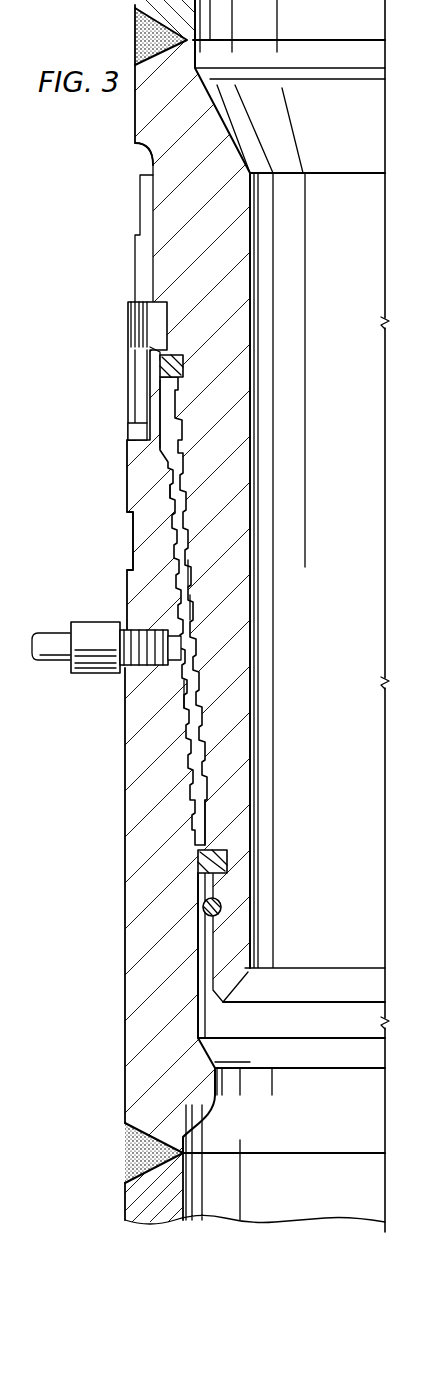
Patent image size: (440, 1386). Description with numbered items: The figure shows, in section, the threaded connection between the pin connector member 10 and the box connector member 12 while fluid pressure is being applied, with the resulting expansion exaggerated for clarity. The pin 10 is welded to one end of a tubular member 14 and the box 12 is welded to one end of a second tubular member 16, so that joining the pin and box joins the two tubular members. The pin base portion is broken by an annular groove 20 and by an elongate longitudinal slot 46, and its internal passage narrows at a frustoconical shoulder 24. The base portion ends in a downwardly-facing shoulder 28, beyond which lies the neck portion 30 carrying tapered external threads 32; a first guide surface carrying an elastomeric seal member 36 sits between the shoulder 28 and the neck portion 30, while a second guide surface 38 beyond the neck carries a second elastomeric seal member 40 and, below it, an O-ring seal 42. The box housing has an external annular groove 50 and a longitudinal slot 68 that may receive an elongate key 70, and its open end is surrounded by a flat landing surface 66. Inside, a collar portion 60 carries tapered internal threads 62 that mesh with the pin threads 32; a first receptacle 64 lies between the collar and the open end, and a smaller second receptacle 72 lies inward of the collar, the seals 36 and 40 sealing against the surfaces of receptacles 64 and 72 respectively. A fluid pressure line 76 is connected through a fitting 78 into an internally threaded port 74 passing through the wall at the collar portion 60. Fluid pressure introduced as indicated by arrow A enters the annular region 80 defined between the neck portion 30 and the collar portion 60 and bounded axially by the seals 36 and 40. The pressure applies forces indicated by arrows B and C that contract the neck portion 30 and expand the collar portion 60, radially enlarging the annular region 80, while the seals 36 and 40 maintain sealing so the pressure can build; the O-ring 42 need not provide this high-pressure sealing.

The pin connector member 10 is at (110, 128).
The box connector member 12 is at (100, 769).
The tubular member 14 is at (147, 2).
The second tubular member 16 is at (137, 1207).
The annular groove 20 is at (137, 178).
The frustoconical shoulder 24 is at (230, 133).
The downwardly-facing shoulder 28 is at (150, 315).
The neck portion 30 is at (190, 490).
The external threads 32 is at (193, 572).
The elastomeric seal member 36 is at (160, 370).
The second external annular guide surface 38 is at (208, 807).
The second elastomeric seal member 40 is at (207, 863).
The O-ring seal 42 is at (222, 907).
The longitudinally-oriented slot 46 is at (150, 270).
The annular groove 50 is at (128, 568).
The internal collar portion 60 is at (177, 688).
The internal threads 62 is at (167, 478).
The receptacle 64 is at (160, 410).
The annular flat landing surface 66 is at (155, 352).
The longitudinally-oriented slot 68 is at (143, 425).
The elongate key 70 is at (133, 337).
The second receptacle 72 is at (195, 953).
The port 74 is at (185, 648).
The fluid pressure line 76 is at (45, 660).
The fitting 78 is at (88, 672).
The annular region 80 is at (195, 603).
The arrow A is at (58, 648).
The arrow B is at (189, 540).
The arrow C is at (188, 718).